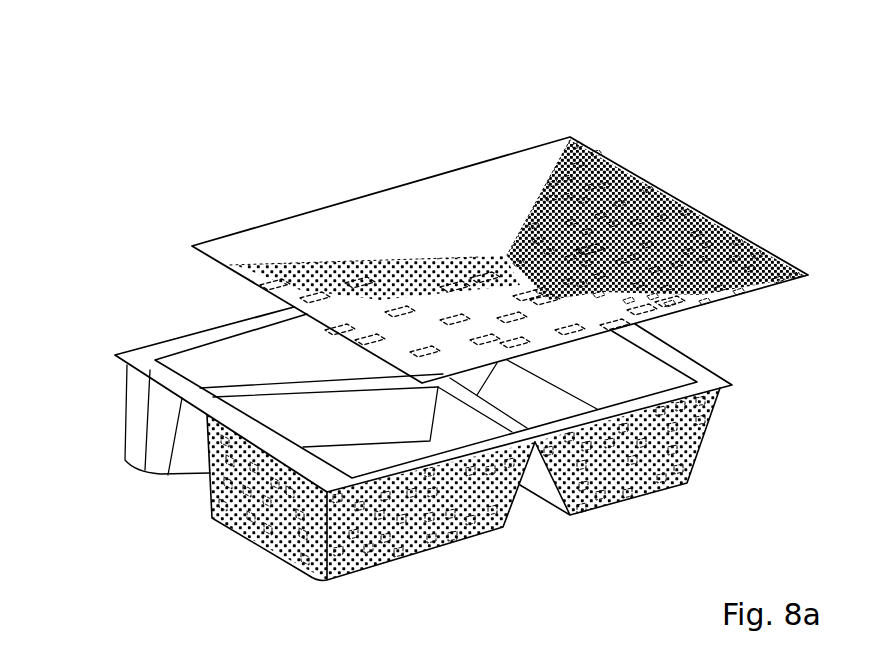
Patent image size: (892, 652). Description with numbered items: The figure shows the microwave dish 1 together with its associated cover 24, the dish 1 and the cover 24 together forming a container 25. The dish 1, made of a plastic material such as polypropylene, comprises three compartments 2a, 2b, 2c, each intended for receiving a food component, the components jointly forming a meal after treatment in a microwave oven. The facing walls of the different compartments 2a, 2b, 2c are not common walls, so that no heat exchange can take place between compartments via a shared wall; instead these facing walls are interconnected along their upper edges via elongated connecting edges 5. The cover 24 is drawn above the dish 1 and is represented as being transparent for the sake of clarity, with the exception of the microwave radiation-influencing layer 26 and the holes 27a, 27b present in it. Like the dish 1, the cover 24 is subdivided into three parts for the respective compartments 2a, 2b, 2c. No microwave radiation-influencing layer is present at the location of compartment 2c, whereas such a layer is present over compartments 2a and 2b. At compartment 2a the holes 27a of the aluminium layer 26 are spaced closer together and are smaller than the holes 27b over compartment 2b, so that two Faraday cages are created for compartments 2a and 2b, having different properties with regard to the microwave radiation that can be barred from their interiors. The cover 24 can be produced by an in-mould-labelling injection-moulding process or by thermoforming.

The dish 1 is at (158, 545).
The compartment 2a is at (563, 398).
The compartment 2b is at (366, 454).
The compartment 2c is at (284, 358).
The elongated connecting edge 5 is at (190, 380).
The cover 24 is at (388, 143).
The container 25 is at (153, 217).
The microwave radiation-influencing layer 26 is at (600, 313).
The holes 27a is at (657, 228).
The holes 27b is at (423, 290).